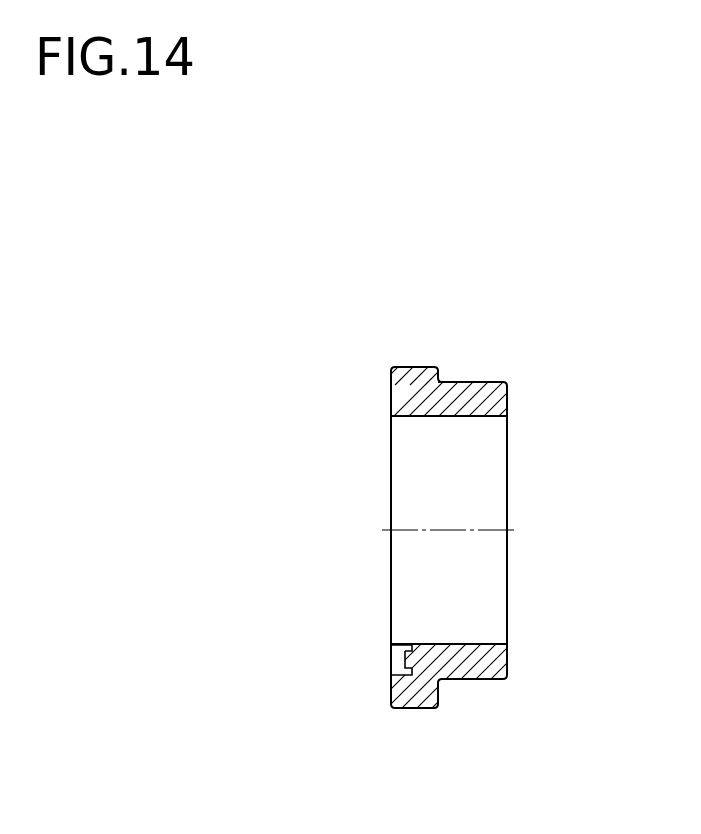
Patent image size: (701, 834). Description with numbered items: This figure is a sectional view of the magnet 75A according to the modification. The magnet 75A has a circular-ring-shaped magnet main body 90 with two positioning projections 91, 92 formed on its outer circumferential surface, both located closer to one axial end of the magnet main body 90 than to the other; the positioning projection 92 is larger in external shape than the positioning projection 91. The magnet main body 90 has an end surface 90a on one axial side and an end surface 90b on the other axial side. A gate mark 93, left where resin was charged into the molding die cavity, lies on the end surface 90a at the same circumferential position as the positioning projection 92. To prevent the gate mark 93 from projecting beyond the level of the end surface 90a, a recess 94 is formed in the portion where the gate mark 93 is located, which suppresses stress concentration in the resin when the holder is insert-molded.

The magnet 75A is at (334, 343).
The magnet main body 90 is at (463, 382).
The end surface 90a is at (391, 400).
The end surface 90b is at (508, 400).
The positioning projection 91 is at (418, 367).
The positioning projection 92 is at (410, 709).
The gate mark 93 is at (399, 665).
The recess 94 is at (398, 651).